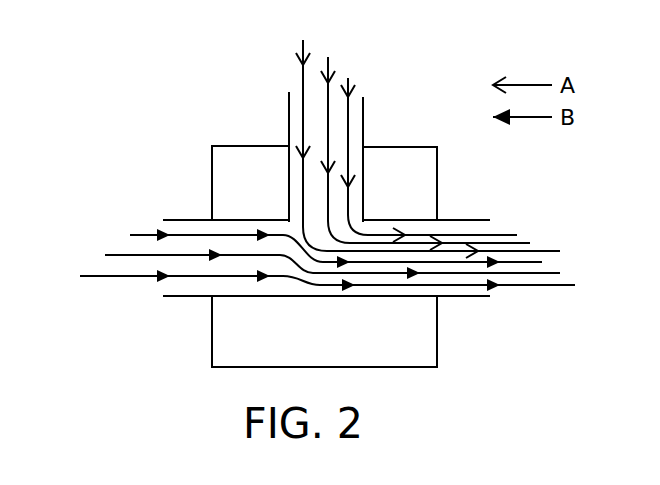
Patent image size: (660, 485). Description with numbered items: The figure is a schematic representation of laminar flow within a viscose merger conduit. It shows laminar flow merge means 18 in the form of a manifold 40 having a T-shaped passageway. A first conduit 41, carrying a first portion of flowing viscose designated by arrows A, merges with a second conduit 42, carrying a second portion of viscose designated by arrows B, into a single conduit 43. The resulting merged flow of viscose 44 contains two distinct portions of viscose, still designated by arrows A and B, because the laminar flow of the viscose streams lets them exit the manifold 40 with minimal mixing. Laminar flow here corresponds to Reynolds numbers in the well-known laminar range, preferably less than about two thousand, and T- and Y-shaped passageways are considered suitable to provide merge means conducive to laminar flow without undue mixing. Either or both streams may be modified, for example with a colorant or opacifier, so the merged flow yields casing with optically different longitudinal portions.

The laminar flow merge means 18 is at (190, 117).
The manifold 40 is at (419, 145).
The first conduit 41 is at (287, 118).
The second conduit 42 is at (195, 217).
The single conduit 43 is at (455, 218).
The merged flow of viscose 44 is at (552, 232).